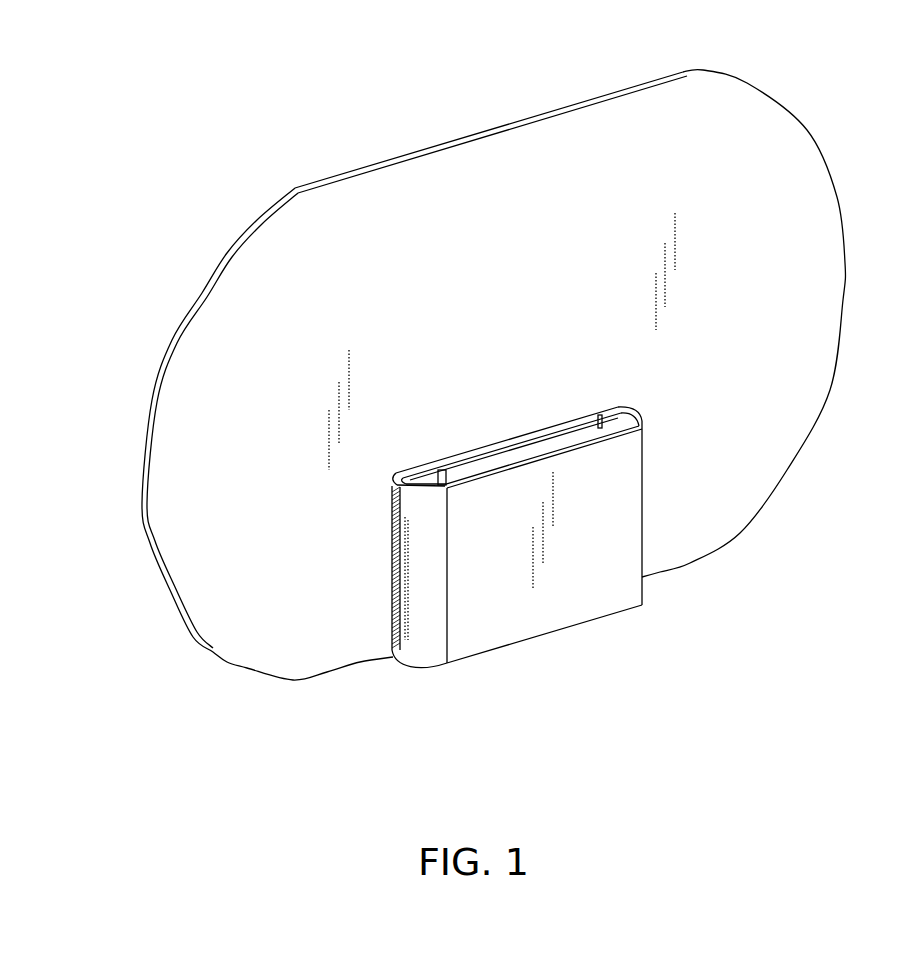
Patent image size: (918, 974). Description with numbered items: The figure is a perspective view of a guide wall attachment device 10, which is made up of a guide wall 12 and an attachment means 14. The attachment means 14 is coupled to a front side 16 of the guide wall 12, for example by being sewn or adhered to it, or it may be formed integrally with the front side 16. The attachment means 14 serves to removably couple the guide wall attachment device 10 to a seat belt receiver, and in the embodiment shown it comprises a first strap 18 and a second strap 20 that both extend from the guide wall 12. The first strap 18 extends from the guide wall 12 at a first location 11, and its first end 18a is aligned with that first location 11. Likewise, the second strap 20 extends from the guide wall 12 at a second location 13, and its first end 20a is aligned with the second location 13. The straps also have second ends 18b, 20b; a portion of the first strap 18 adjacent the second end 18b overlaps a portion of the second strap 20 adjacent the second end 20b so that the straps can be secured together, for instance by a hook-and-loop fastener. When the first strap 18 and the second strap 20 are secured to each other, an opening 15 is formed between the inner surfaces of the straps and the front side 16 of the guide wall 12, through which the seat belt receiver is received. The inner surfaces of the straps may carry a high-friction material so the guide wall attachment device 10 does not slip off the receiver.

The guide wall attachment device 10 is at (107, 678).
The first location 11 is at (323, 563).
The guide wall 12 is at (693, 127).
The second location 13 is at (632, 378).
The attachment means 14 is at (543, 598).
The opening 15 is at (482, 688).
The front side 16 is at (248, 610).
The first strap 18 is at (618, 585).
The first end 18a is at (390, 483).
The second end 18b is at (642, 490).
The second strap 20 is at (453, 468).
The first end 20a is at (607, 410).
The second end 20b is at (438, 477).